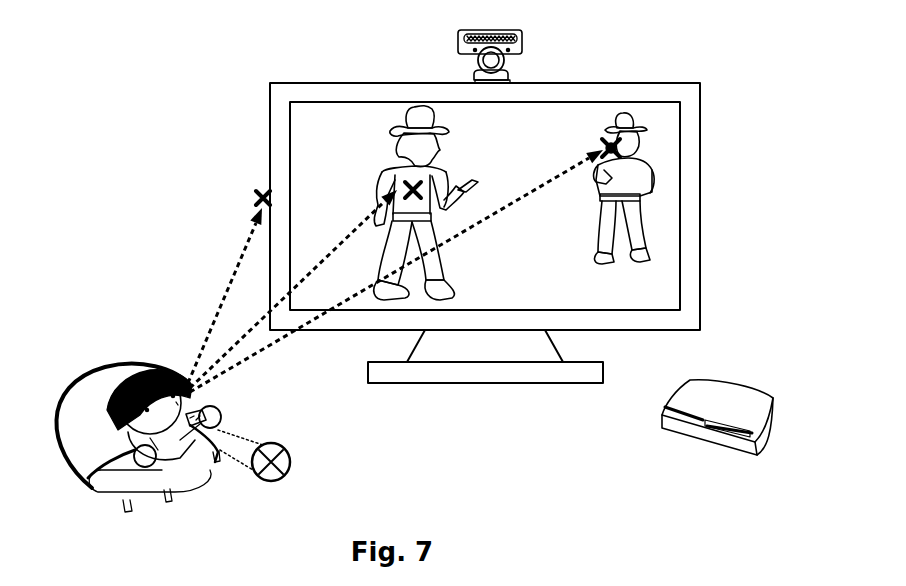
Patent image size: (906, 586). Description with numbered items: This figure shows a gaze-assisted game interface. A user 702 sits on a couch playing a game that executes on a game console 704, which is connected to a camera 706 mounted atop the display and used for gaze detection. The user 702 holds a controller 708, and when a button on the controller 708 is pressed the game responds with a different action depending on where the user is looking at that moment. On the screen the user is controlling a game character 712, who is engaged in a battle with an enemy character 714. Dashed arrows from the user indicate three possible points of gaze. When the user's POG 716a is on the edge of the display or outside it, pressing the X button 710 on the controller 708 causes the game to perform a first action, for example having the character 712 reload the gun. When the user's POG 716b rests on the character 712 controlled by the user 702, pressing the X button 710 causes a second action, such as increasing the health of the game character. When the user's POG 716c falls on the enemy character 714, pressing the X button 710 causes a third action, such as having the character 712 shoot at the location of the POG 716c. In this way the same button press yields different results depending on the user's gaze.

The user 702 is at (192, 455).
The game console 704 is at (734, 404).
The camera 706 is at (522, 48).
The controller 708 is at (204, 408).
The X button 710 is at (290, 461).
The game character 712 is at (392, 130).
The enemy character 714 is at (612, 124).
The POG 716a is at (255, 196).
The POG 716b is at (404, 190).
The POG 716c is at (600, 146).